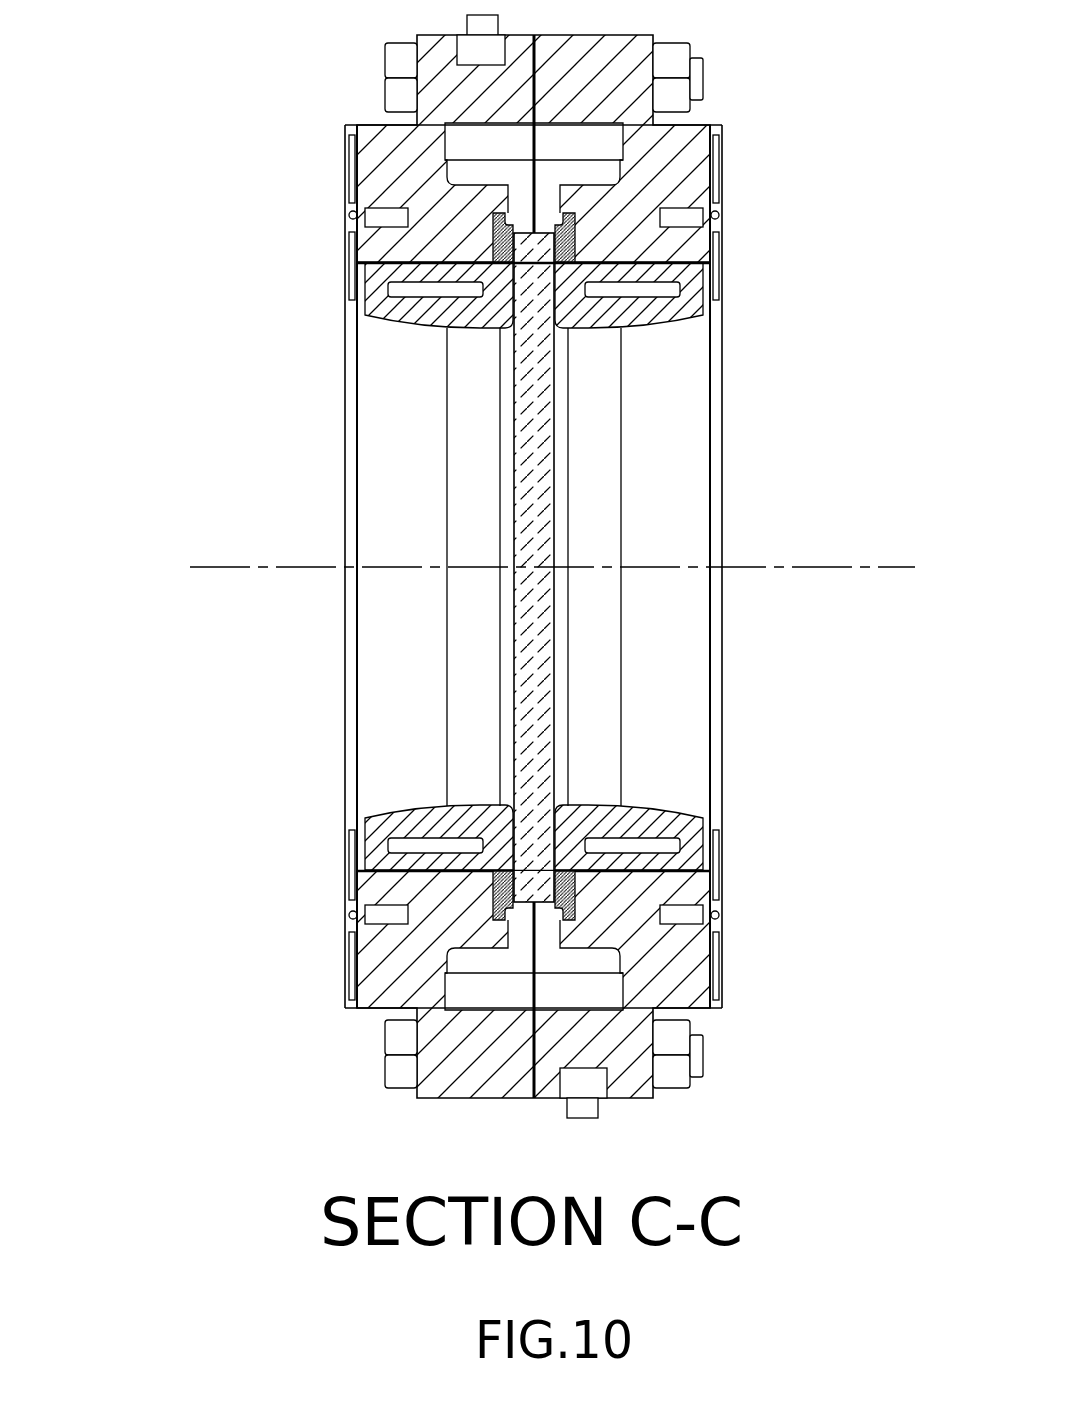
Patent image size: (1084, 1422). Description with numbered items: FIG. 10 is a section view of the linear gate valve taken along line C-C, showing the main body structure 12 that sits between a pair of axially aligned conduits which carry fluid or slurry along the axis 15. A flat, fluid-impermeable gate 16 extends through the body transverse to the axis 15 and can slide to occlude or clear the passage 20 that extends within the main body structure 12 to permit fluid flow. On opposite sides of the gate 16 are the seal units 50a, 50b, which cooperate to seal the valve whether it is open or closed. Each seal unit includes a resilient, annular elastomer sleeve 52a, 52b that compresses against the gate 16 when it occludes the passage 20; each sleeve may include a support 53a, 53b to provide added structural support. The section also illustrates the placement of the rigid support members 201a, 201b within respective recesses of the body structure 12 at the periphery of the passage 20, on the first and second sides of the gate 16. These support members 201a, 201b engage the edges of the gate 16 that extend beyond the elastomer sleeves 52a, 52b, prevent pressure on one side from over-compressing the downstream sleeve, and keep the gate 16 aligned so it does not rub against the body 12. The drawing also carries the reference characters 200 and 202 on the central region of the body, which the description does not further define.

The main body structure 12 is at (655, 972).
The axis 15 is at (685, 565).
The gate 16 is at (535, 473).
The passage 20 is at (422, 453).
The seal unit 50a is at (343, 340).
The seal unit 50b is at (722, 340).
The elastomer sleeve 52a is at (410, 818).
The elastomer sleeve 52b is at (665, 818).
The support 53a is at (345, 830).
The support 53b is at (722, 828).
The T-shaped port cavity 200 is at (557, 933).
The rigid support member 201a is at (490, 903).
The rigid support member 201b is at (575, 884).
The shaft end 202 is at (533, 897).